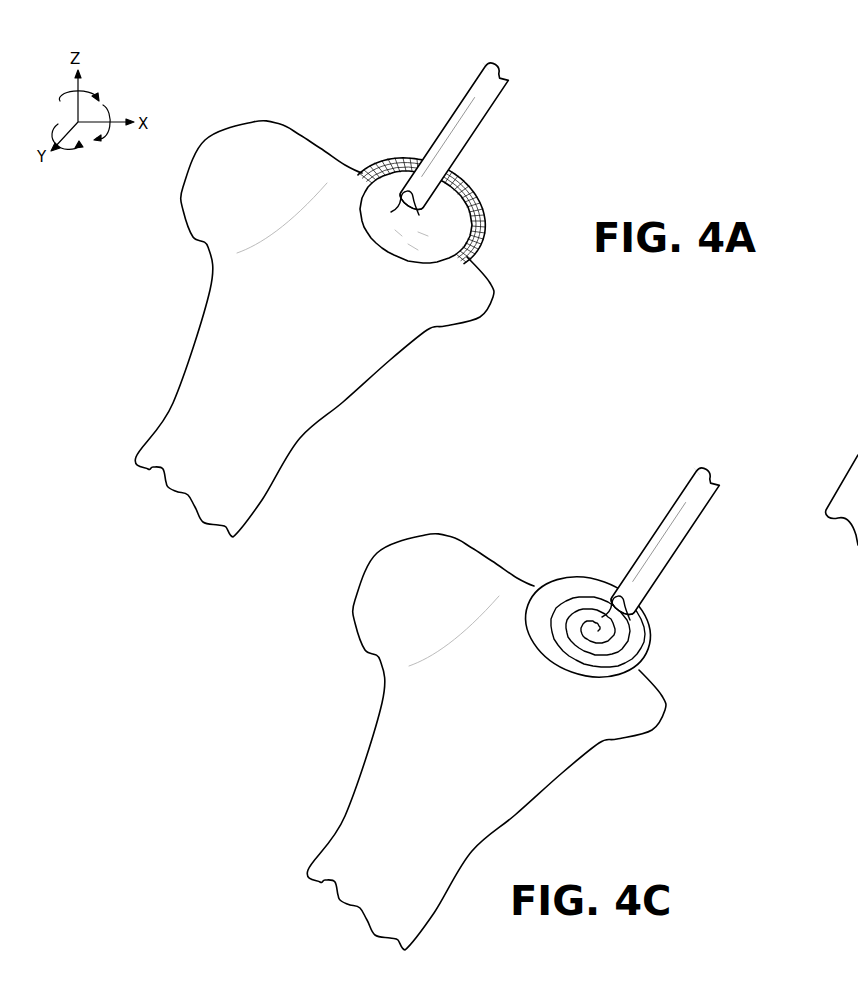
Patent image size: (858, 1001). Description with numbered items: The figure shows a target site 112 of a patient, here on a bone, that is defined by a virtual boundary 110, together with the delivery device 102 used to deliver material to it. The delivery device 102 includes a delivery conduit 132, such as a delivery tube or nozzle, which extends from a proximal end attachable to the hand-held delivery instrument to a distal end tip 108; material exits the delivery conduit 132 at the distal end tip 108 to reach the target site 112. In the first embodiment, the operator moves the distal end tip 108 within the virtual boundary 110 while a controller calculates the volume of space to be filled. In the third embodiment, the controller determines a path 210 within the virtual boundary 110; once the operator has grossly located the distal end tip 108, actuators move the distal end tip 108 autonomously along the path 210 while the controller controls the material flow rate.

In FIG. 4A, the delivery device 102 is at (431, 96).
In FIG. 4C, the delivery device 102 is at (641, 504).
In FIG. 4A, the delivery conduit 132 is at (494, 75).
In FIG. 4C, the delivery conduit 132 is at (706, 483).
In FIG. 4A, the distal end tip 108 is at (433, 205).
In FIG. 4C, the distal end tip 108 is at (640, 614).
In FIG. 4A, the virtual boundary 110 is at (480, 214).
In FIG. 4C, the virtual boundary 110 is at (637, 616).
In FIG. 4A, the target site 112 is at (481, 215).
In FIG. 4C, the target site 112 is at (584, 686).
In FIG. 4C, the path 210 is at (633, 650).